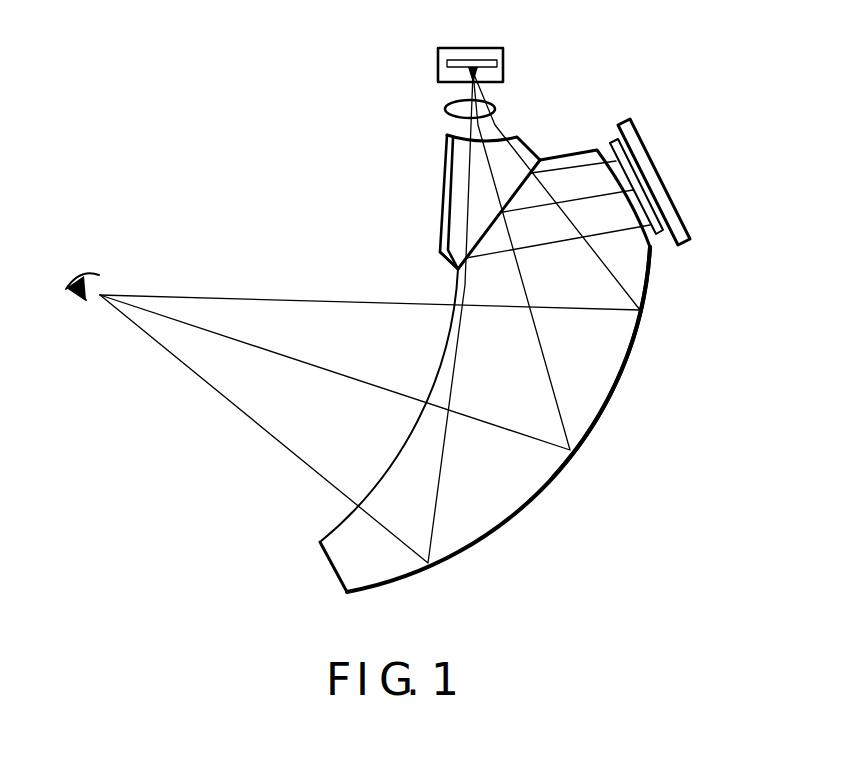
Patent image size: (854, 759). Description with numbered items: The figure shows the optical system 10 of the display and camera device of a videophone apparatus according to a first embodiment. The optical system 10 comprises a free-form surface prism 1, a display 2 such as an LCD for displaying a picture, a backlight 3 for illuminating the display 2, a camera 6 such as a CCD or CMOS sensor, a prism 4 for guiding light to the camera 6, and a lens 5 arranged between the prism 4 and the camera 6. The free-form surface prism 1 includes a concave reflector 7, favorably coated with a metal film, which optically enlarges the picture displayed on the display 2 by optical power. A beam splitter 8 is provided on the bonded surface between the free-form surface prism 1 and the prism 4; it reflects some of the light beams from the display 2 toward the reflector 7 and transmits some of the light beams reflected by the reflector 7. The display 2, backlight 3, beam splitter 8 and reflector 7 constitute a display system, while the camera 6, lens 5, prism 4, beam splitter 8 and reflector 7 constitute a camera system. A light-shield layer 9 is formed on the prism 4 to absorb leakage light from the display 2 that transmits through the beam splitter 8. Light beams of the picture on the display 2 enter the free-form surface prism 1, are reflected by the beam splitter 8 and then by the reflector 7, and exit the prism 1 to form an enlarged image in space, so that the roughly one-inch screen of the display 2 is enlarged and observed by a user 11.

The free-form surface prism 1 is at (535, 476).
The display 2 is at (666, 234).
The backlight 3 is at (677, 211).
The prism 4 is at (457, 243).
The lens 5 is at (495, 101).
The camera 6 is at (503, 49).
The concave reflector 7 is at (601, 407).
The beam splitter 8 is at (533, 168).
The light-shield layer 9 is at (443, 173).
The optical system 10 is at (632, 56).
The user 11 is at (67, 310).